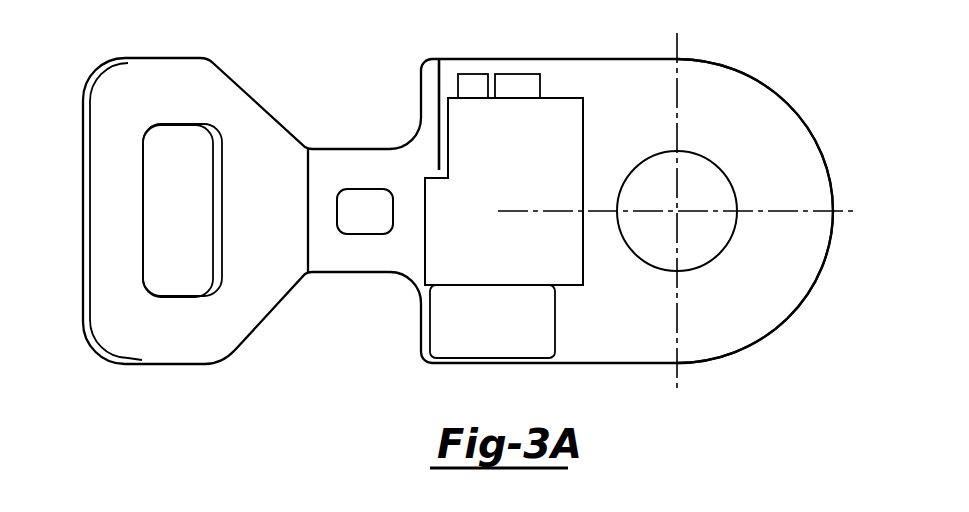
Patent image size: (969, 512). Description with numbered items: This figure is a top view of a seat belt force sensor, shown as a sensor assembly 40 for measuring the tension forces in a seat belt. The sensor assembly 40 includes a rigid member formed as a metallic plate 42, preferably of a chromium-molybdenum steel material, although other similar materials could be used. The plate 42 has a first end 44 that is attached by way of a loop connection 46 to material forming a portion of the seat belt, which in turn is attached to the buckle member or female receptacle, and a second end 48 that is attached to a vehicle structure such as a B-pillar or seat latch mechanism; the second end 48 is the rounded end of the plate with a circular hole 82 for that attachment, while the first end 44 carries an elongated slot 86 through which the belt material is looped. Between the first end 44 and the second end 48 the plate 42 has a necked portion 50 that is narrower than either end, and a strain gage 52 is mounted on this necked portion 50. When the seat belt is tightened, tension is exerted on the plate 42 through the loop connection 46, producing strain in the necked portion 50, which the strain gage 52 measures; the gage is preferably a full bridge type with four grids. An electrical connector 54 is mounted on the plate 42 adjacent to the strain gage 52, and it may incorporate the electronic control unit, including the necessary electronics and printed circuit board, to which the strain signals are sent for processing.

The sensor assembly 40 is at (853, 156).
The plate 42 is at (585, 347).
The first end 44 is at (83, 192).
The loop connection 46 is at (150, 291).
The second end 48 is at (835, 235).
The necked portion 50 is at (365, 258).
The strain gage 52 is at (360, 203).
The electrical connector 54 is at (609, 113).
The pivot hole 82 is at (720, 197).
The slot 86 is at (170, 161).